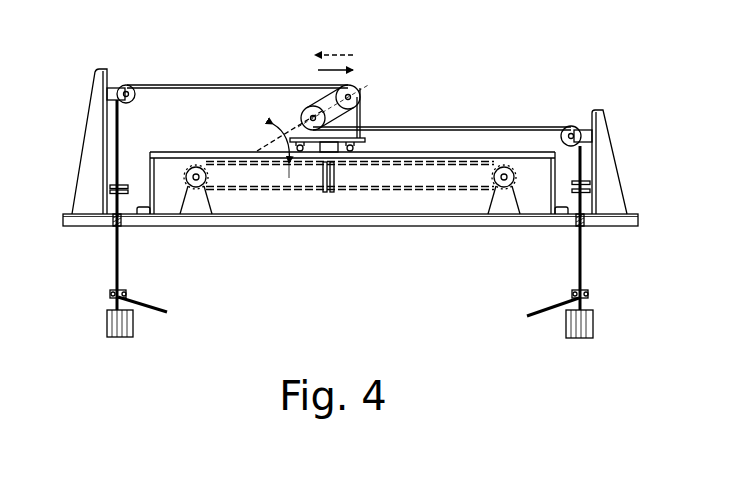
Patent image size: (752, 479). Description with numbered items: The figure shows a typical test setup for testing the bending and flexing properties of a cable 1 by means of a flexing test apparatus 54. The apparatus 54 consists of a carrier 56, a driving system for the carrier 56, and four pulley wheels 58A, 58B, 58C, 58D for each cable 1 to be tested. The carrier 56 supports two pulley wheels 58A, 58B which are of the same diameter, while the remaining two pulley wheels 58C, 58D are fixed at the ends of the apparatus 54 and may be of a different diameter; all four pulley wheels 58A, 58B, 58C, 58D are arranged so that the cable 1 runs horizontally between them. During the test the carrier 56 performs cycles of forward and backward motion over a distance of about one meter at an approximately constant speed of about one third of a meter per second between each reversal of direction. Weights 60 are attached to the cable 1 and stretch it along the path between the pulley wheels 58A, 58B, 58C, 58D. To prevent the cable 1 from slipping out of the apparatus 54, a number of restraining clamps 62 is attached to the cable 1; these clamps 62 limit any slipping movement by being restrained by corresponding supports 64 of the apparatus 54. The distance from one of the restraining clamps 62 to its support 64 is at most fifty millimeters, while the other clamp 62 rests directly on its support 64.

The cable 1 is at (212, 85).
The apparatus 54 is at (488, 85).
The carrier 56 is at (298, 130).
The pulley wheel 58A is at (358, 86).
The pulley wheel 58B is at (313, 106).
The pulley wheel 58C is at (122, 86).
The pulley wheel 58D is at (566, 126).
The weight 60 is at (107, 311).
The restraining clamp 62 is at (104, 182).
The support 64 is at (104, 188).